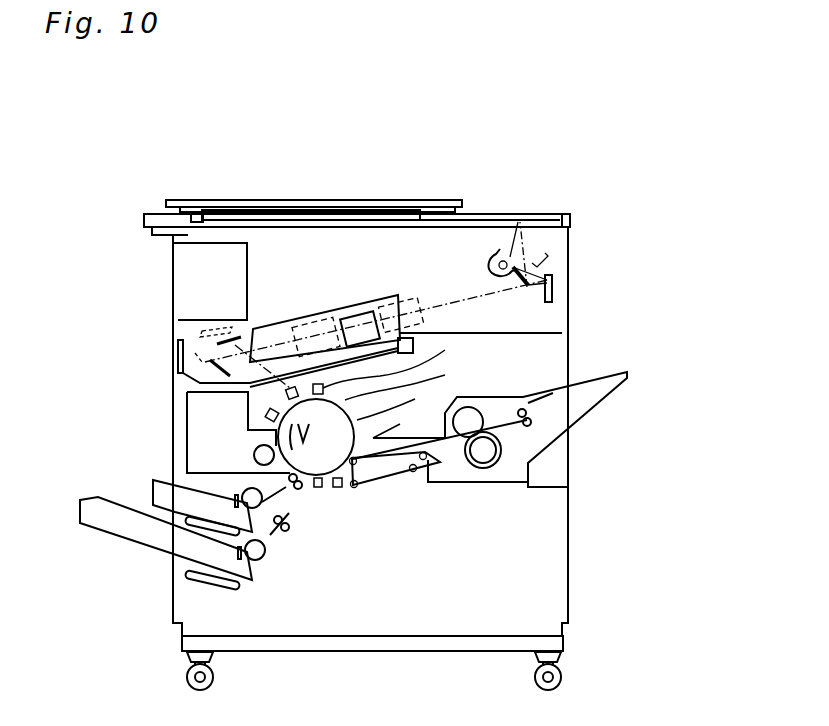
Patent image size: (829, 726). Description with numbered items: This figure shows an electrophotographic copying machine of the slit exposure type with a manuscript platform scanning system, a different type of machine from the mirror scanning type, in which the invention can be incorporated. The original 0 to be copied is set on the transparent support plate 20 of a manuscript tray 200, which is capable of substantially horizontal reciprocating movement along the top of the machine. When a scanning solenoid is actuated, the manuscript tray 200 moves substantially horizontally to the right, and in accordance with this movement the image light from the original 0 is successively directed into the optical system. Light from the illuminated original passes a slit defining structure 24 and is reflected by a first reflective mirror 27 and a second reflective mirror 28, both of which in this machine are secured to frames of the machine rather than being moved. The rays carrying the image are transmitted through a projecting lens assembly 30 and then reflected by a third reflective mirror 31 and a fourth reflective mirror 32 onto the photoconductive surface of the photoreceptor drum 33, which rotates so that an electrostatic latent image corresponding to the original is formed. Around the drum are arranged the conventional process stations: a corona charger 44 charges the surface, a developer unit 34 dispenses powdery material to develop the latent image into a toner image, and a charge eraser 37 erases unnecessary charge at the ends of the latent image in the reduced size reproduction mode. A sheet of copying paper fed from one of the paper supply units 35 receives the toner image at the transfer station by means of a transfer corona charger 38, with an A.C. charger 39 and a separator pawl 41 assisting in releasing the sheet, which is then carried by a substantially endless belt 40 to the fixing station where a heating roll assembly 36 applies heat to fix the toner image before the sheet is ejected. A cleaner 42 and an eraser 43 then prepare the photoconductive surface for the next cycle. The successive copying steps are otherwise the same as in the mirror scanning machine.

The manuscript tray 200 is at (226, 200).
The original 0 is at (373, 208).
The transparent support plate 20 is at (423, 217).
The slit defining structure 24 is at (540, 263).
The first reflective mirror 27 is at (530, 278).
The second reflective mirror 28 is at (552, 290).
The projecting lens assembly 30 is at (355, 320).
The third reflective mirror 31 is at (187, 365).
The fourth reflective mirror 32 is at (222, 342).
The photoreceptor drum 33 is at (403, 401).
The developer unit 34 is at (254, 455).
The paper supply units 35 is at (157, 538).
The heating roll assembly 36 is at (484, 468).
The charge eraser 37 is at (268, 415).
The transfer corona charger 38 is at (318, 490).
The A.C. charger 39 is at (340, 490).
The endless belt 40 is at (390, 486).
The separator pawl 41 is at (404, 422).
The cleaner 42 is at (413, 378).
The eraser 43 is at (402, 360).
The corona charger 44 is at (290, 388).